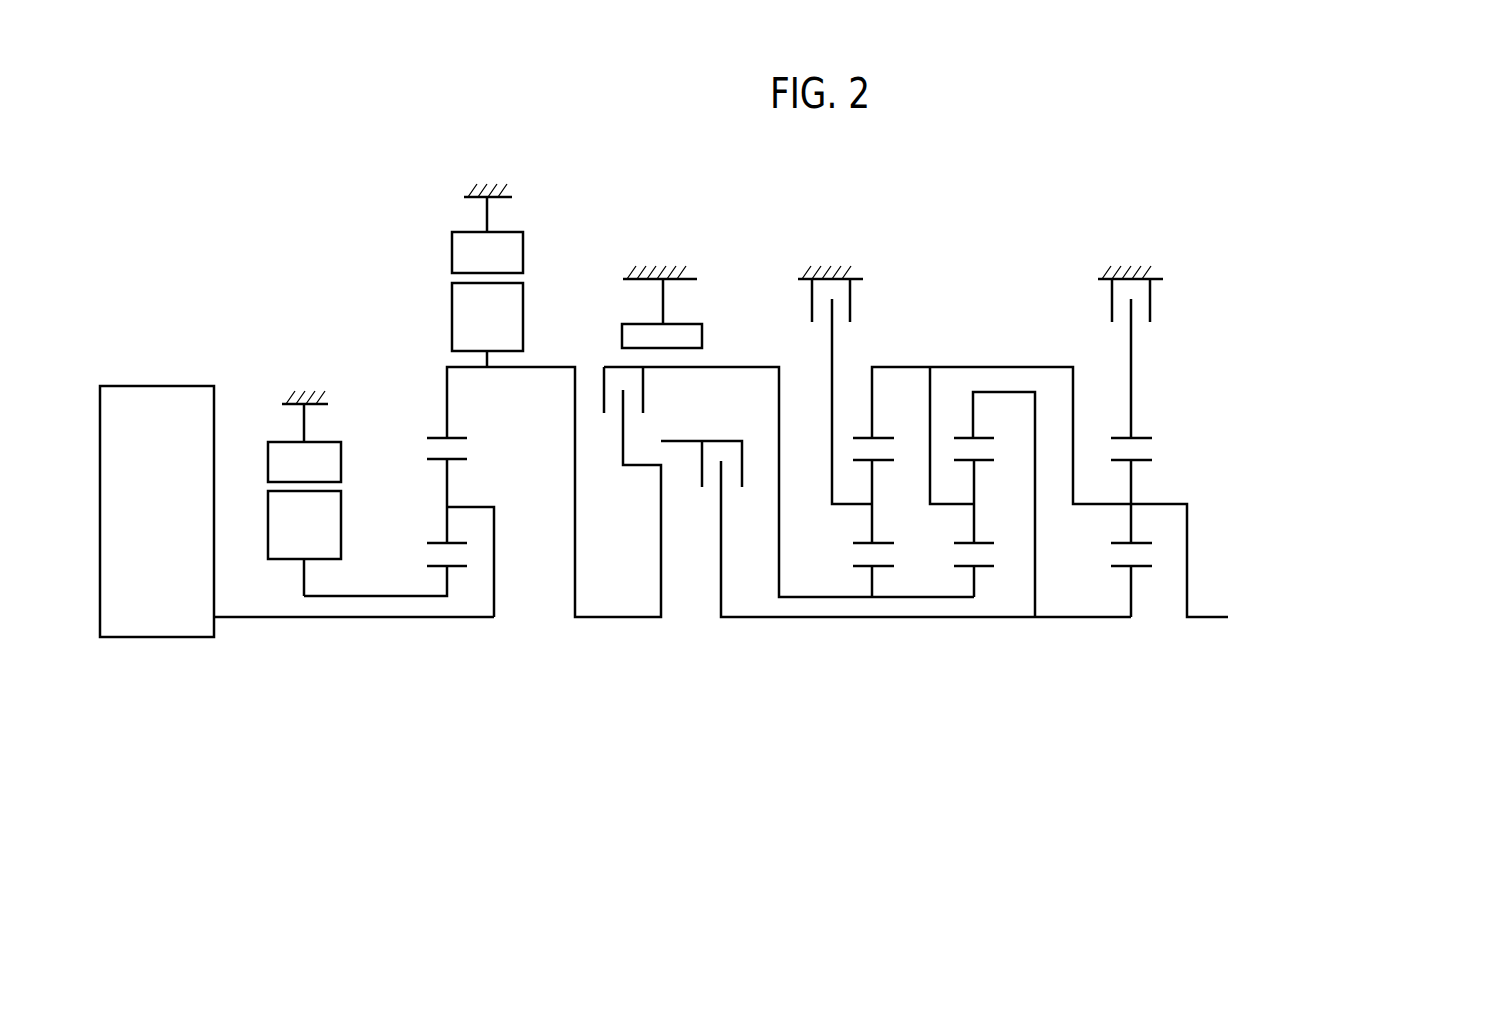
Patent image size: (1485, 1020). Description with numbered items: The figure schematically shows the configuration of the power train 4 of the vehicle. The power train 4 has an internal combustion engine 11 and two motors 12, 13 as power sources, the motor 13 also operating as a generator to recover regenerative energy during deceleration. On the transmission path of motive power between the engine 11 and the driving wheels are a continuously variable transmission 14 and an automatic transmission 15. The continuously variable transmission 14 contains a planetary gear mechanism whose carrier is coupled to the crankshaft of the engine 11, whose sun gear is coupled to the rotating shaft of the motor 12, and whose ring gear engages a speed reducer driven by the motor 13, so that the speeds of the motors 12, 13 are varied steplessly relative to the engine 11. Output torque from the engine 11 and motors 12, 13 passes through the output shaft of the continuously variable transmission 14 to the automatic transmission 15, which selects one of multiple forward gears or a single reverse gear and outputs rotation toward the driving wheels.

The power train 4 is at (1169, 728).
The internal combustion engine 11 is at (178, 637).
The motor 12 is at (341, 525).
The motor 13 is at (523, 300).
The continuously variable transmission 14 is at (450, 443).
The automatic transmission 15 is at (1132, 642).